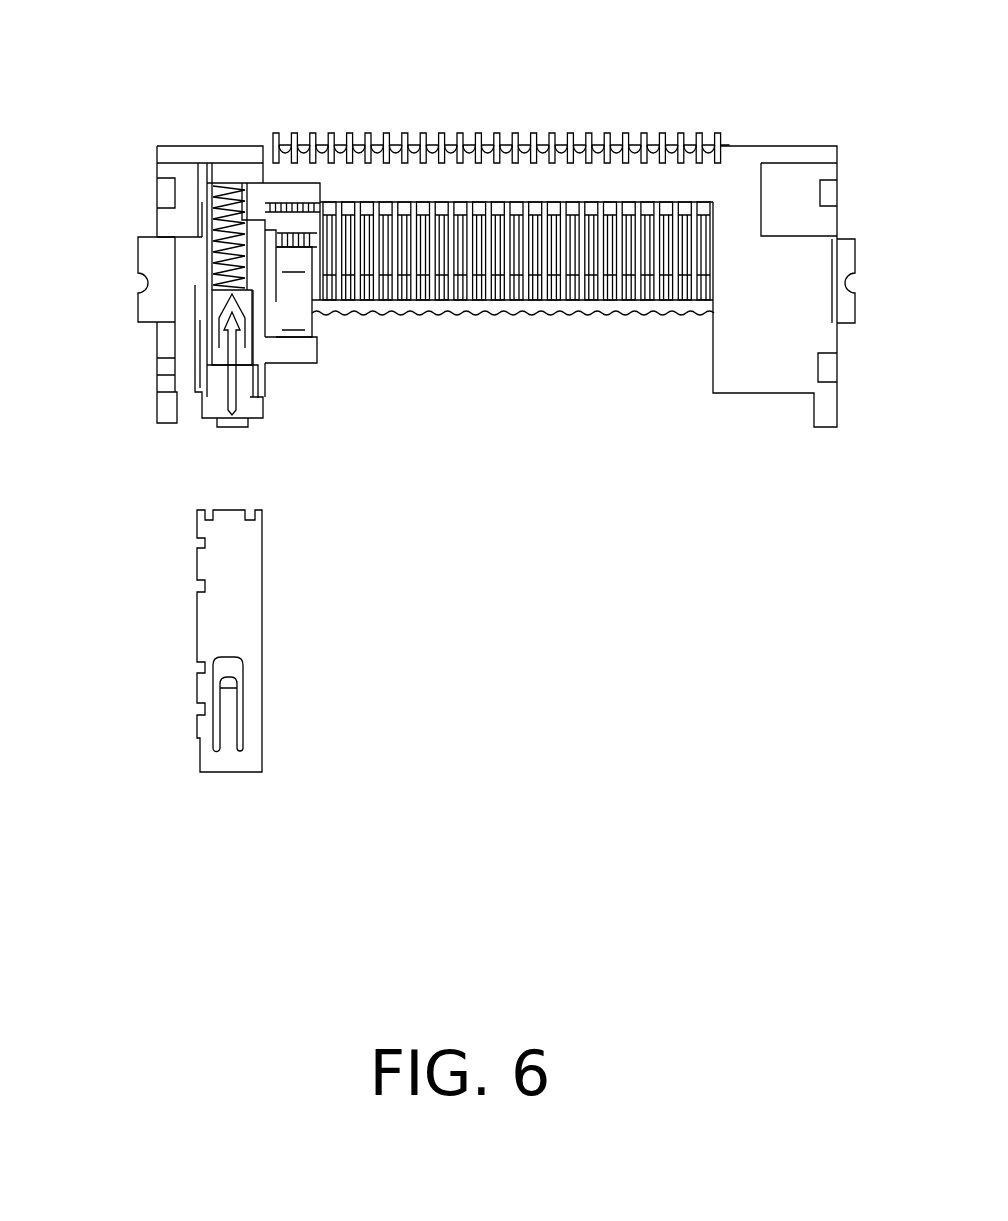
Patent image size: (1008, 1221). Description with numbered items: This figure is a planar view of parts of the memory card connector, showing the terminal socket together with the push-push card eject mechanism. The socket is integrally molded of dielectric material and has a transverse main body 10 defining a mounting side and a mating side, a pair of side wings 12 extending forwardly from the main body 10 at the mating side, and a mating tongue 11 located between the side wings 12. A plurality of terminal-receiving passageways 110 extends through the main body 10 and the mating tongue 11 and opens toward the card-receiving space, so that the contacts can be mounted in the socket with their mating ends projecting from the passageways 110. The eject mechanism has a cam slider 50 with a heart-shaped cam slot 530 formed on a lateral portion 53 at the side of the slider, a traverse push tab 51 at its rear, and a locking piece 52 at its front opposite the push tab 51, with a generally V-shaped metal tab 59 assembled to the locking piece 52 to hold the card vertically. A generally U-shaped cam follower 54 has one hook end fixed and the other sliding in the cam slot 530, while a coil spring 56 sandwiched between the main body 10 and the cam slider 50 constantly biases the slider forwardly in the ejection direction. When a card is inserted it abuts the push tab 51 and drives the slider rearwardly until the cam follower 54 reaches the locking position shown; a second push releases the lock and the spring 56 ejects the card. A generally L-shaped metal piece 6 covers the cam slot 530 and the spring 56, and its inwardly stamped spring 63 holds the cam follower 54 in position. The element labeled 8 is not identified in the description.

The transverse main body 10 is at (597, 182).
The mating tongue 11 is at (547, 302).
The terminal-receiving passageways 110 is at (622, 302).
The side wing 12 is at (787, 273).
The latch block 8 is at (158, 253).
The cam slider 50 is at (257, 225).
The push tab 51 is at (308, 220).
The locking piece 52 is at (288, 357).
The lateral portion 53 is at (213, 302).
The cam slot 530 is at (237, 343).
The cam follower 54 is at (230, 380).
The coil spring 56 is at (232, 185).
The V-shaped metal tab 59 is at (297, 307).
The metal piece 6 is at (243, 622).
The spring 63 is at (228, 717).